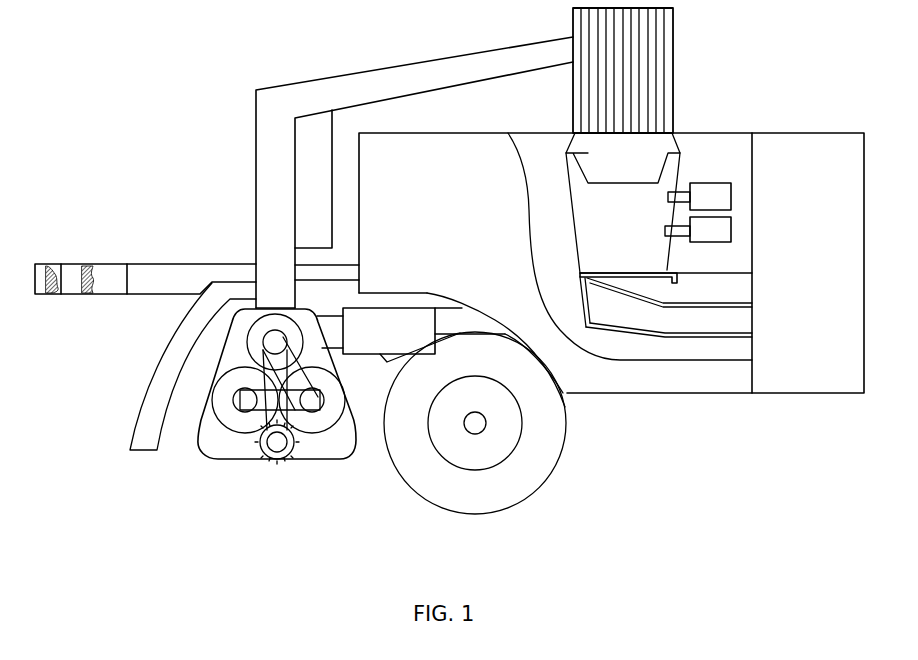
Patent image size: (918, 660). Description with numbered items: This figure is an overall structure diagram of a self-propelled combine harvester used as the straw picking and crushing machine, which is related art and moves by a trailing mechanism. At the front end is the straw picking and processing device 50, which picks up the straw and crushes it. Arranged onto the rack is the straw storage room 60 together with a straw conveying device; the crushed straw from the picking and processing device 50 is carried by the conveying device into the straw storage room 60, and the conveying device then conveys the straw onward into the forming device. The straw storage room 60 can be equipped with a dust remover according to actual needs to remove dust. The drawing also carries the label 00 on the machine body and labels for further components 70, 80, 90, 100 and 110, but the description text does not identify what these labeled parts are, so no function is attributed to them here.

The machine body 00 is at (461, 148).
The straw picking and processing device 50 is at (230, 443).
The straw storage room 60 is at (648, 70).
The suction pipe 70 is at (276, 167).
The nozzle tube 80 is at (70, 278).
The lower drive unit 90 is at (717, 235).
The upper drive unit 100 is at (724, 195).
The tray 110 is at (690, 281).